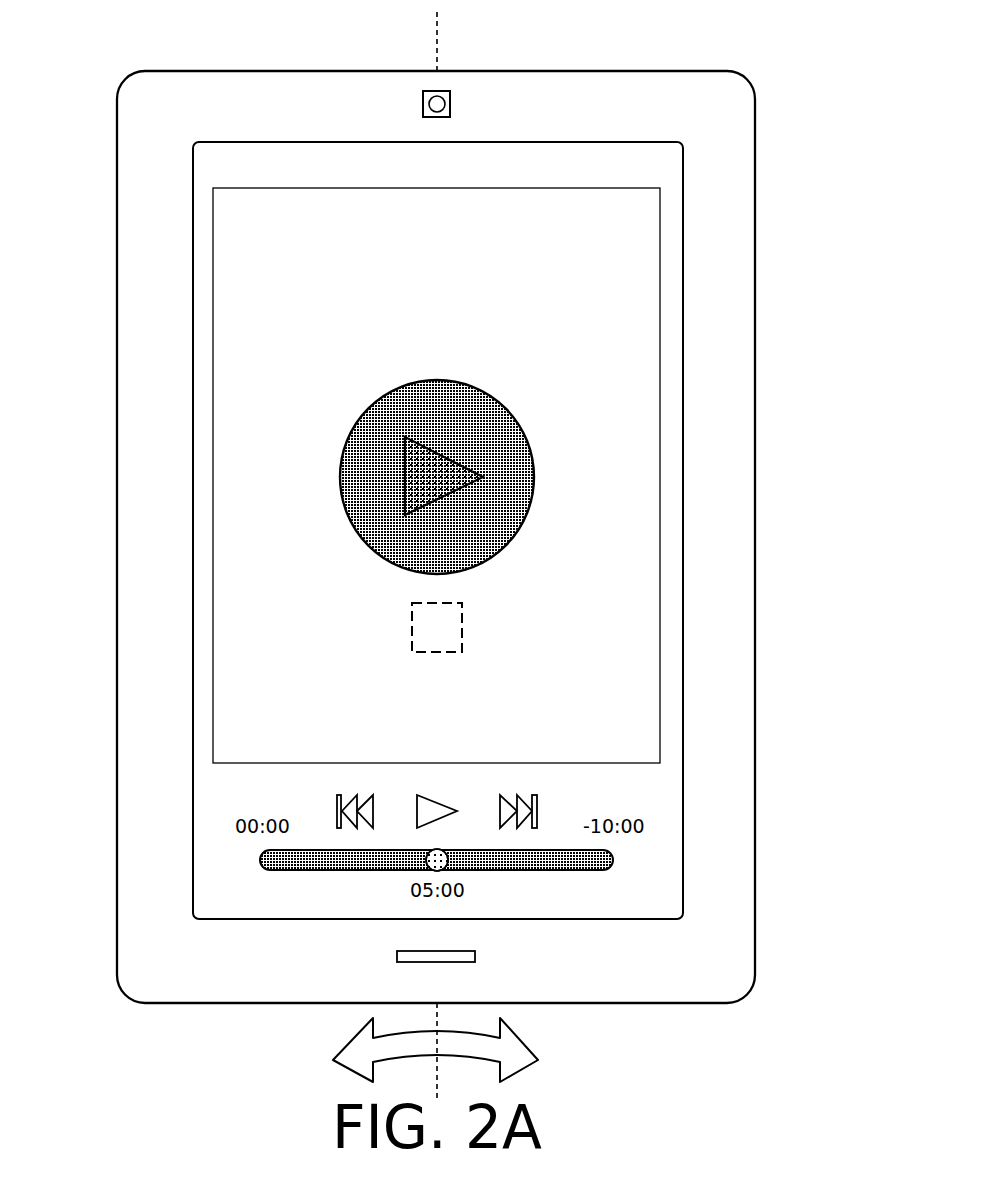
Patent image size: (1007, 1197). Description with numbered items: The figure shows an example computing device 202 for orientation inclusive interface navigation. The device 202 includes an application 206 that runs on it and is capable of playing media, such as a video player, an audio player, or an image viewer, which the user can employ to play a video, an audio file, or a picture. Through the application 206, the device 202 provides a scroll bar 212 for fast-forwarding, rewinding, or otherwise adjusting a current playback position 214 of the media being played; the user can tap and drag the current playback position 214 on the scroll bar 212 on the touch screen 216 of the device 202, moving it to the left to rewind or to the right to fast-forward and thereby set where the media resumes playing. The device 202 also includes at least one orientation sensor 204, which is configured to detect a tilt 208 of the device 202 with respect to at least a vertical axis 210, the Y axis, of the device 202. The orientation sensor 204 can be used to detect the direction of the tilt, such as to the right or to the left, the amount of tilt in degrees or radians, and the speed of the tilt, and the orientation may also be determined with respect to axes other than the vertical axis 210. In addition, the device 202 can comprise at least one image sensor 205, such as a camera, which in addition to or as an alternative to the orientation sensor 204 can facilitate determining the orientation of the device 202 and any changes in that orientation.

The computing device 202 is at (117, 118).
The orientation sensor 204 is at (412, 632).
The image sensor 205 is at (450, 108).
The application 206 is at (574, 188).
The tilt 208 is at (540, 1050).
The vertical axis 210 is at (437, 49).
The scroll bar 212 is at (570, 870).
The current playback position 214 is at (438, 850).
The touch screen 216 is at (630, 919).